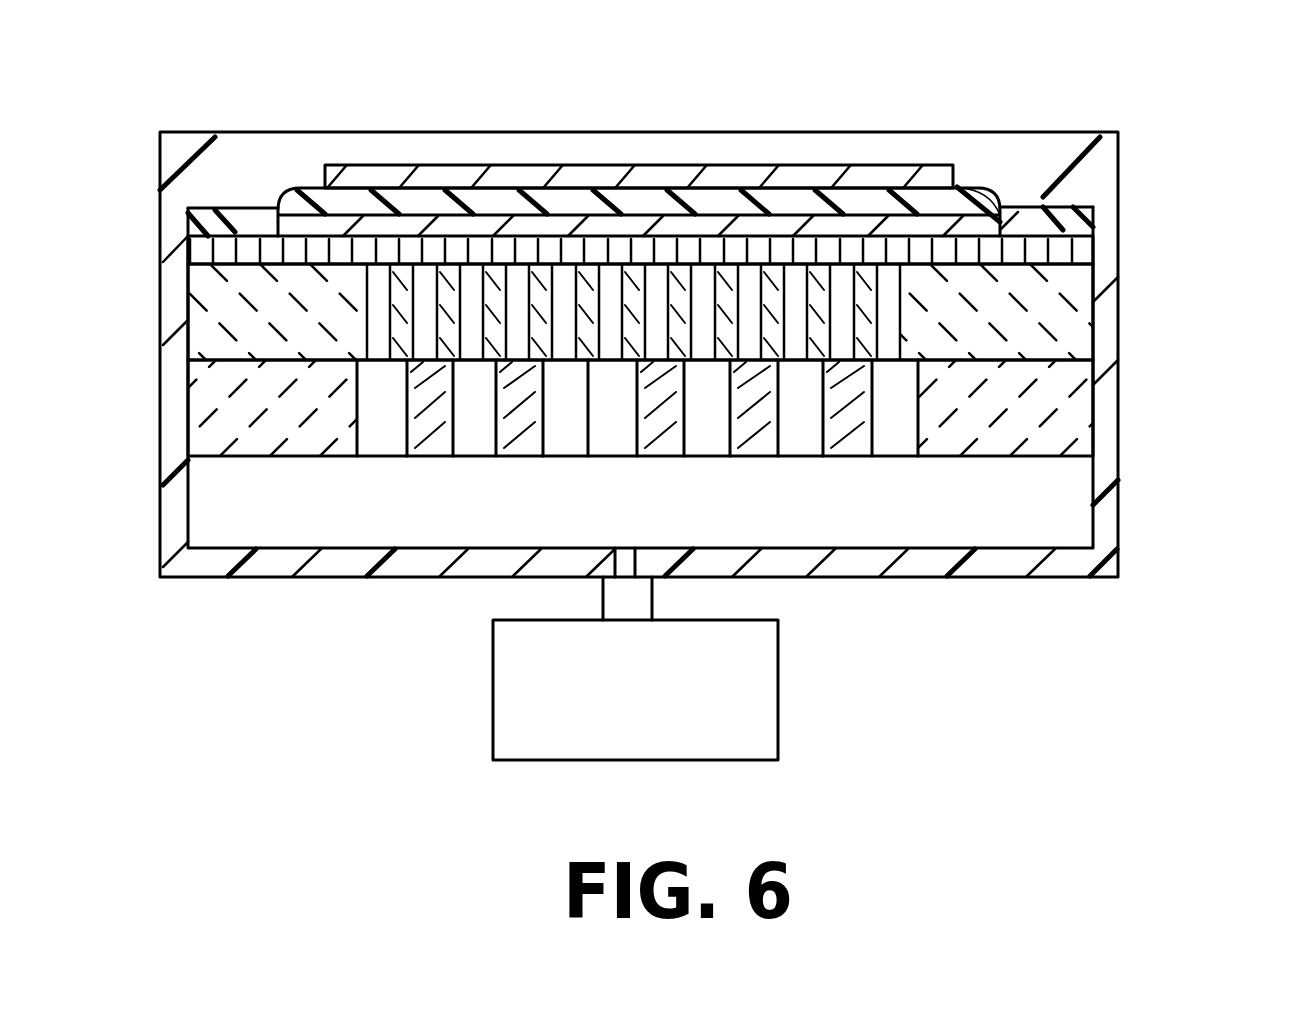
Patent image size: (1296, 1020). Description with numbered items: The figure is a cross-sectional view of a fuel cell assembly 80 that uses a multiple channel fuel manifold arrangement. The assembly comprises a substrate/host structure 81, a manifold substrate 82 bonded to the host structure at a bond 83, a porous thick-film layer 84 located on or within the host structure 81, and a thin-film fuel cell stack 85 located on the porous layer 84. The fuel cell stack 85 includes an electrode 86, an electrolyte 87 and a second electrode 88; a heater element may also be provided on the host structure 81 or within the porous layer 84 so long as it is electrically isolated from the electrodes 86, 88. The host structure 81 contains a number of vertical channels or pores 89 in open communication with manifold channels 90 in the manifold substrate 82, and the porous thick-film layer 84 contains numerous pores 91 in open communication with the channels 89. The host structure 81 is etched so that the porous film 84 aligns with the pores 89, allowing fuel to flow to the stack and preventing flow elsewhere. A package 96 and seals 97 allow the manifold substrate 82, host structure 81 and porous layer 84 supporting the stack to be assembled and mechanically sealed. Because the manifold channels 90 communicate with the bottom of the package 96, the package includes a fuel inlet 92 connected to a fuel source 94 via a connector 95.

The fuel cell assembly 80 is at (768, 57).
The substrate/host structure 81 is at (1060, 318).
The manifold substrate 82 is at (1067, 428).
The bond 83 is at (1093, 357).
The porous thick-film layer 84 is at (1060, 250).
The thin-film fuel cell stack 85 is at (552, 118).
The electrode 86 is at (400, 230).
The electrolyte 87 is at (968, 226).
The electrode 88 is at (612, 165).
The vertical channels or pores 89 is at (392, 340).
The manifold channels 90 is at (568, 440).
The pores 91 is at (860, 248).
The fuel inlet 92 is at (627, 547).
The fuel source 94 is at (778, 717).
The connector 95 is at (652, 600).
The package 96 is at (160, 253).
The seals 97 is at (232, 230).